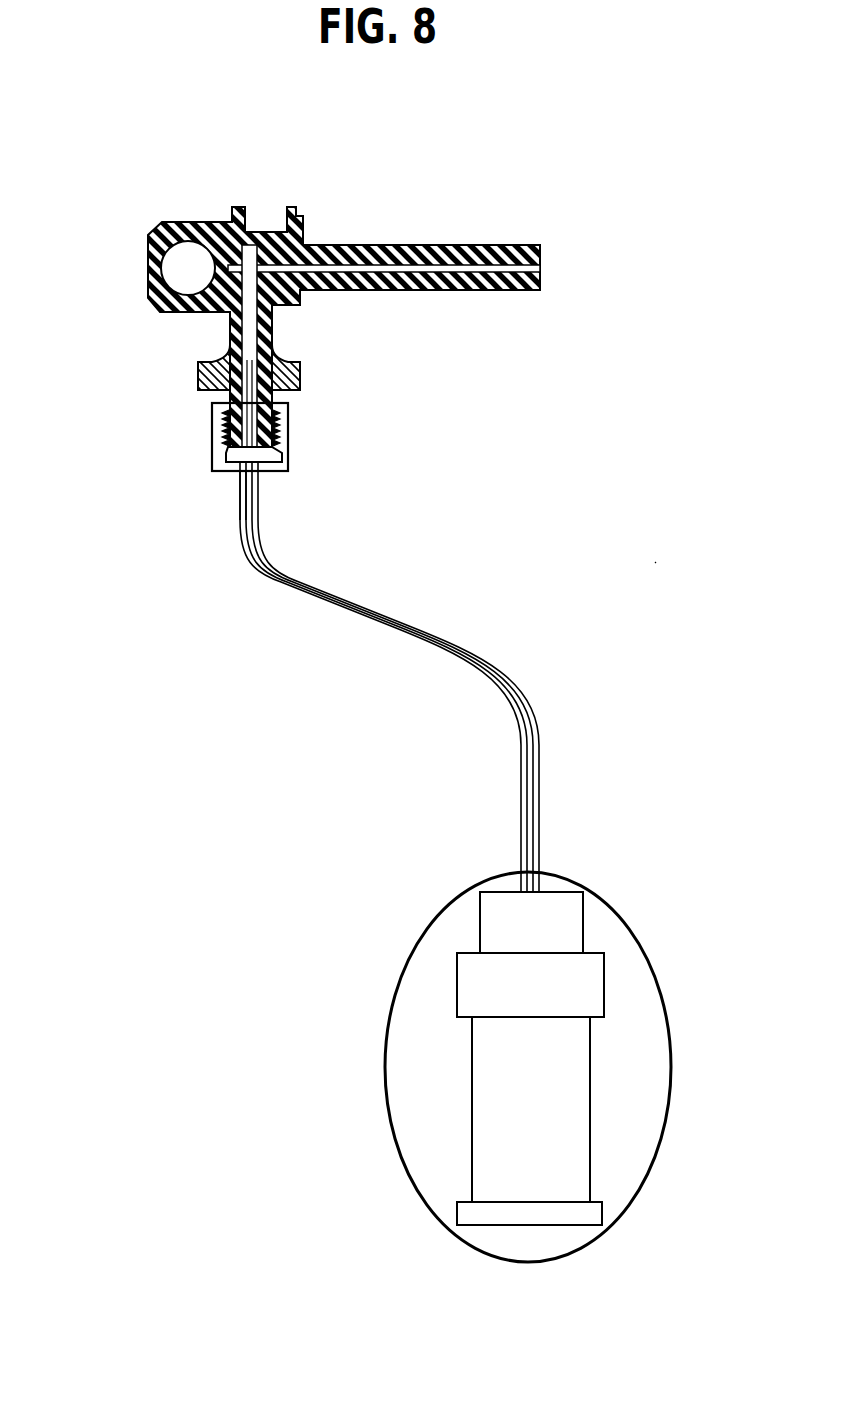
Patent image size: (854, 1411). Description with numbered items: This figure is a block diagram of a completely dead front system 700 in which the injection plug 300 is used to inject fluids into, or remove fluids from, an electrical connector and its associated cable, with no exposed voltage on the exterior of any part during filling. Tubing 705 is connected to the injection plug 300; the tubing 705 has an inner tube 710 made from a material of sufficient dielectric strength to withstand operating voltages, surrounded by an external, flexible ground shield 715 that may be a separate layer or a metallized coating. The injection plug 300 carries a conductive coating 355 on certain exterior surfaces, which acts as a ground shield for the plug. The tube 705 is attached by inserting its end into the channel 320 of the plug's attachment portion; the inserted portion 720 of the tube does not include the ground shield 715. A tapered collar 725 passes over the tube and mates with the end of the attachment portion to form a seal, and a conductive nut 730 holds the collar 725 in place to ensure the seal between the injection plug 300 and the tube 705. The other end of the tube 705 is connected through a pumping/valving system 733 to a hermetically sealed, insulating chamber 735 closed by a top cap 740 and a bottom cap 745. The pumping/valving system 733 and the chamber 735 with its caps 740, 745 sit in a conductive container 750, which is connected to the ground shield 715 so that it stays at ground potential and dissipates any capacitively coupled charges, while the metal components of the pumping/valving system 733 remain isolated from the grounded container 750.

The injection plug 300 is at (196, 222).
The channel 320 is at (420, 265).
The conductive coating 355 is at (272, 401).
The dead front system 700 is at (657, 561).
The tubing 705 is at (398, 617).
The inner tube 710 is at (335, 605).
The ground shield 715 is at (277, 588).
The portion of the tube 720 is at (230, 400).
The tapered collar 725 is at (260, 458).
The conductive nut 730 is at (214, 477).
The pumping/valving system 733 is at (500, 926).
The chamber 735 is at (500, 1117).
The top cap 740 is at (480, 985).
The bottom cap 745 is at (483, 1215).
The conductive container 750 is at (643, 1194).